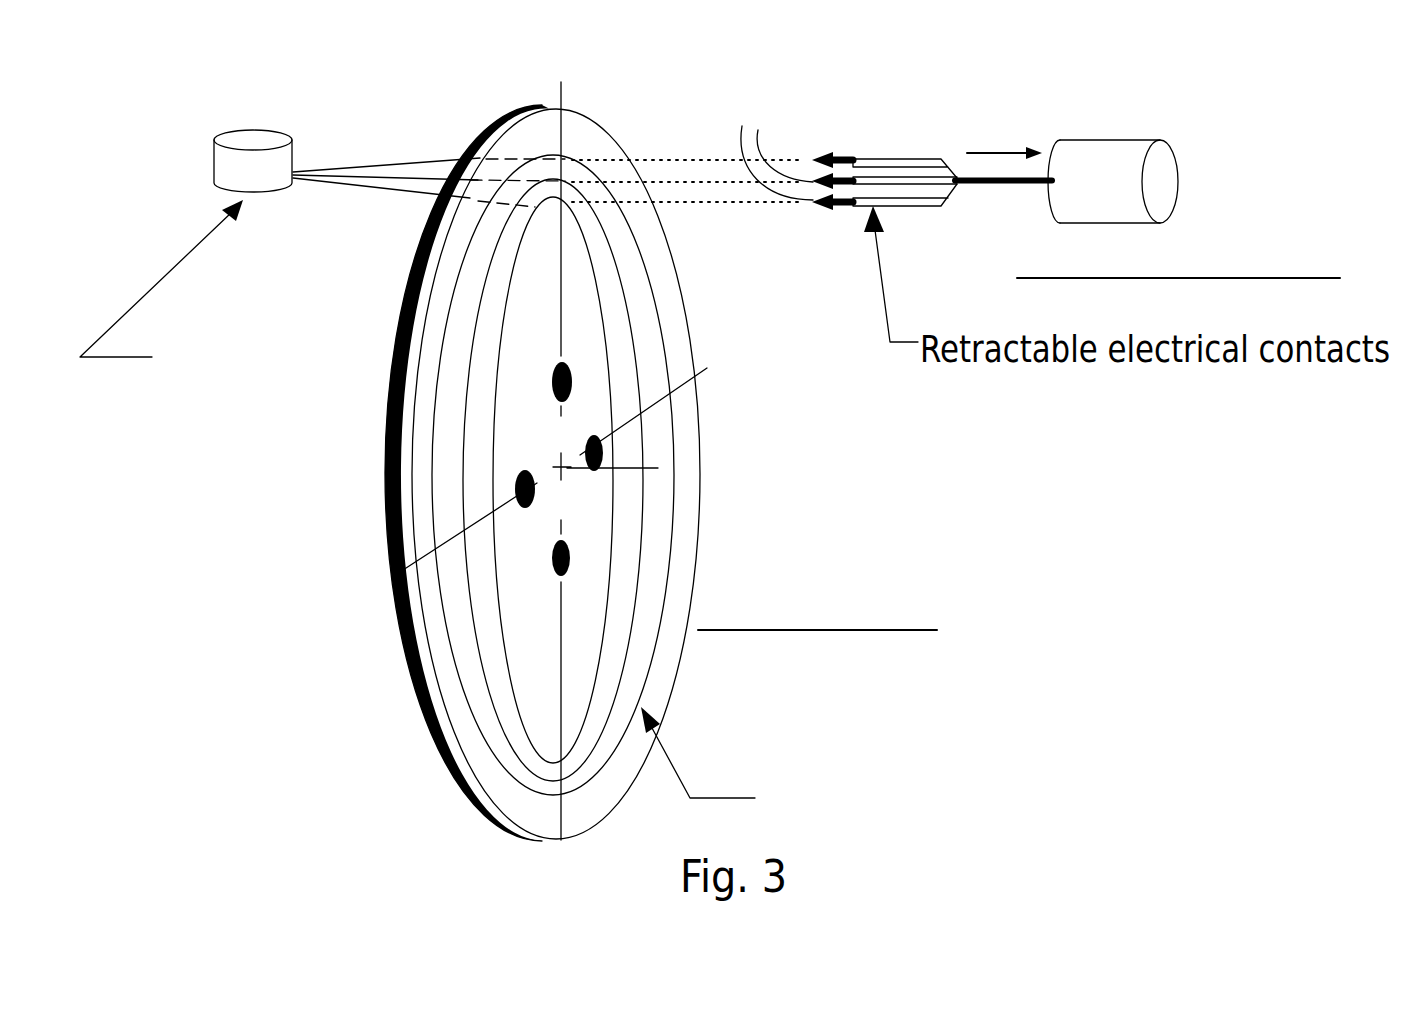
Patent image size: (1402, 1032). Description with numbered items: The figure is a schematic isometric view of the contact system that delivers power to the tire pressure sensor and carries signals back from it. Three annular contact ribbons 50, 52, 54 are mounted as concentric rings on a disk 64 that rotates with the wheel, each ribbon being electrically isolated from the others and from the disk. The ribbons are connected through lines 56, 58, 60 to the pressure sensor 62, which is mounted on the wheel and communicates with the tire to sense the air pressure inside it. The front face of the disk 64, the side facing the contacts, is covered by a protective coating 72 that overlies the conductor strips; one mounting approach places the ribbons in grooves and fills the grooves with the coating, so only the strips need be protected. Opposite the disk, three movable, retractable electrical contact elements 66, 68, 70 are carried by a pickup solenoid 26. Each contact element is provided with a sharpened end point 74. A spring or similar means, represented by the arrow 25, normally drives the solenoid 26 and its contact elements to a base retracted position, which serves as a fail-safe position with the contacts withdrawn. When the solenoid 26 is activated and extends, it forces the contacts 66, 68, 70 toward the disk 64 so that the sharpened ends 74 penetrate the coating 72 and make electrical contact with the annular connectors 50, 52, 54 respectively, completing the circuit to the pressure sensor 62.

The arrow 25 is at (1004, 130).
The solenoid 26 is at (1090, 138).
The annular contact ribbon 50 is at (757, 461).
The annular contact ribbon 52 is at (645, 495).
The annular contact ribbon 54 is at (616, 447).
The line 56 is at (385, 162).
The line 58 is at (363, 180).
The line 60 is at (403, 193).
The pressure sensor 62 is at (186, 266).
The disk 64 is at (698, 553).
The electrical contact element 66 is at (905, 158).
The electrical contact element 68 is at (868, 177).
The electrical contact element 70 is at (913, 206).
The protective coating 72 is at (385, 522).
The sharpened end point 74 is at (822, 152).